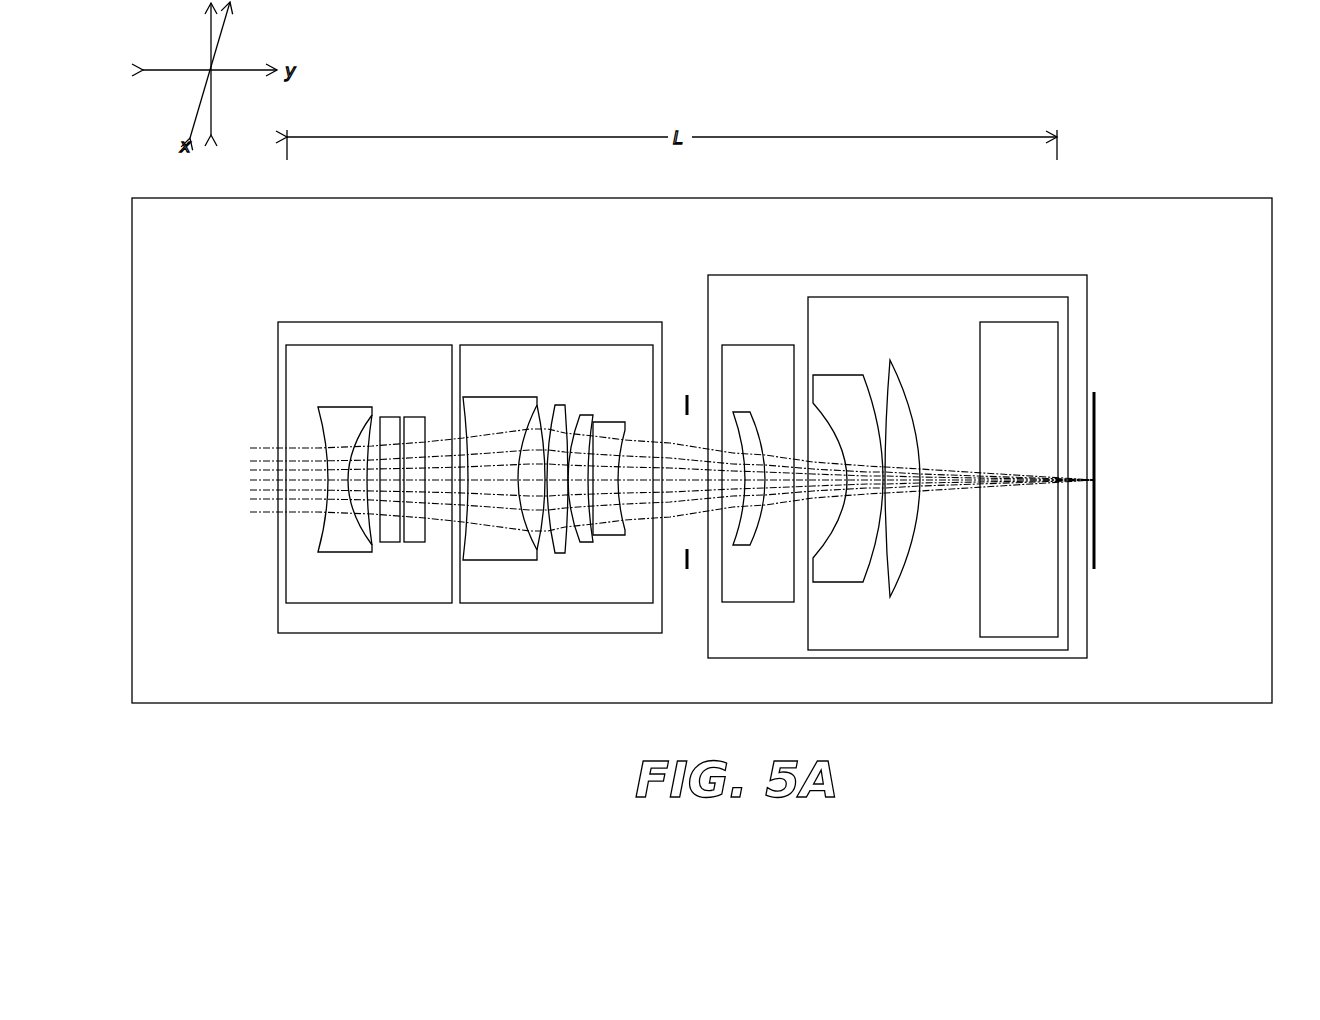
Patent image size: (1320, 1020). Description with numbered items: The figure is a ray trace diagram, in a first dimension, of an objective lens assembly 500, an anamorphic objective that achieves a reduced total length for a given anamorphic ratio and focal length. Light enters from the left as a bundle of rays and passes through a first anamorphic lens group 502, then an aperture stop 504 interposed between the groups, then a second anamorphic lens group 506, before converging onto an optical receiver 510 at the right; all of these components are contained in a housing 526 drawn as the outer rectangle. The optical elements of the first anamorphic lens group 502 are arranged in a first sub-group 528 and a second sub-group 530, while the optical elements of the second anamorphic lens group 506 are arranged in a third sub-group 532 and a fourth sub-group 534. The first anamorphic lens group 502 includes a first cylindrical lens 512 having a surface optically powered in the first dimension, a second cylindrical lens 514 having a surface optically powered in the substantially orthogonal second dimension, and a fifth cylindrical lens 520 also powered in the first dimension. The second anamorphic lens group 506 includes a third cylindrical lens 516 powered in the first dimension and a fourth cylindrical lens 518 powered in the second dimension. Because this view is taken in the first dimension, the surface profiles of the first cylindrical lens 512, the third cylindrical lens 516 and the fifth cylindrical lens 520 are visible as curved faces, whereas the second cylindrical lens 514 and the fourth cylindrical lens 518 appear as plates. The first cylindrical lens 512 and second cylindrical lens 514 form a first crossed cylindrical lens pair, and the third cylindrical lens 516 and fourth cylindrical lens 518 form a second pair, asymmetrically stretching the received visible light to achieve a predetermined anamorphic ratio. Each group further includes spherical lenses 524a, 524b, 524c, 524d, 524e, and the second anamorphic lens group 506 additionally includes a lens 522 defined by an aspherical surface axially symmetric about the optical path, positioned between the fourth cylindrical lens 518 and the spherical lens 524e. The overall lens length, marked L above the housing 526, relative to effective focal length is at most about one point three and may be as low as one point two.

The objective lens assembly 500 is at (922, 107).
The first anamorphic lens group 502 is at (313, 320).
The aperture stop 504 is at (687, 569).
The second anamorphic lens group 506 is at (882, 272).
The optical receiver 510 is at (1097, 420).
The first cylindrical lens 512 is at (330, 407).
The second cylindrical lens 514 is at (390, 543).
The third cylindrical lens 516 is at (742, 547).
The fourth cylindrical lens 518 is at (1045, 322).
The fifth cylindrical lens 520 is at (478, 397).
The aspherical lens 522 is at (905, 572).
The spherical lens 524a is at (412, 543).
The spherical lens 524b is at (557, 553).
The spherical lens 524c is at (585, 545).
The spherical lens 524d is at (618, 418).
The spherical lens 524e is at (830, 582).
The housing 526 is at (1190, 195).
The first sub-group 528 is at (385, 343).
The second sub-group 530 is at (550, 343).
The third sub-group 532 is at (738, 342).
The fourth sub-group 534 is at (963, 296).